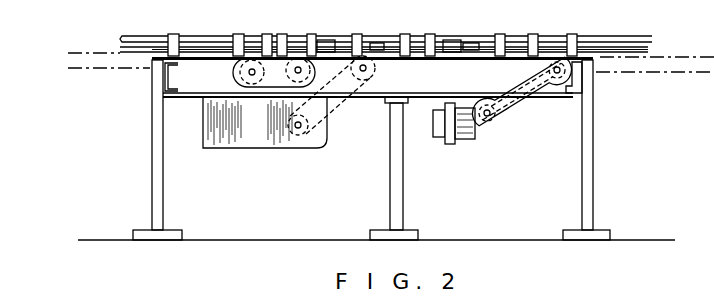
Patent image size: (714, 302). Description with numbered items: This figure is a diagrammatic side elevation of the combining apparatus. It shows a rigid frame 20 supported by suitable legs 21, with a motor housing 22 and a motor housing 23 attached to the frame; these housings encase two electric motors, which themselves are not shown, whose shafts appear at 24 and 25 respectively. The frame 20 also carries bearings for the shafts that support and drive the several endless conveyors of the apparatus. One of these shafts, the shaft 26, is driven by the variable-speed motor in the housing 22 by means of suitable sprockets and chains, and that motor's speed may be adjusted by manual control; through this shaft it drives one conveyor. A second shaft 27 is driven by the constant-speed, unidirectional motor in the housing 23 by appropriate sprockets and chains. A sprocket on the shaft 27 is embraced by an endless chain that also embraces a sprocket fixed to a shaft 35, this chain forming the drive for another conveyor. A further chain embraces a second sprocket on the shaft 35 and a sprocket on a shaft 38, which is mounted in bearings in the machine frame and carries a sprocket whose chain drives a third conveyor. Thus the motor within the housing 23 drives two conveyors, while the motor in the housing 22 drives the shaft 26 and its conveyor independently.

The rigid frame 20 is at (185, 100).
The legs 21 is at (152, 158).
The motor housing 22 is at (226, 140).
The motor housing 23 is at (469, 128).
The motor shaft 24 is at (299, 137).
The motor shaft 25 is at (500, 124).
The shaft 26 is at (367, 82).
The shaft 27 is at (594, 88).
The shaft 35 is at (294, 44).
The shaft 38 is at (253, 46).